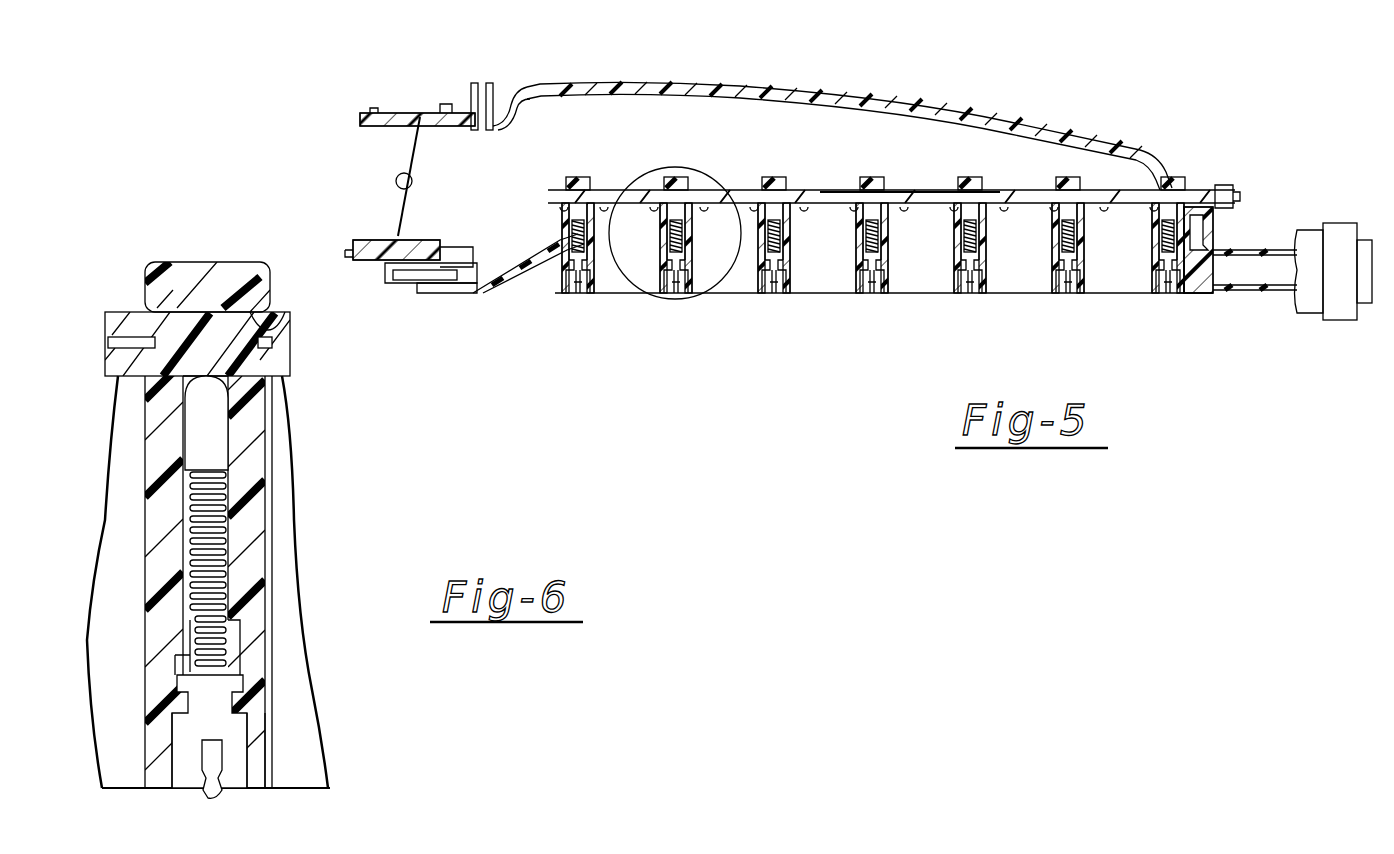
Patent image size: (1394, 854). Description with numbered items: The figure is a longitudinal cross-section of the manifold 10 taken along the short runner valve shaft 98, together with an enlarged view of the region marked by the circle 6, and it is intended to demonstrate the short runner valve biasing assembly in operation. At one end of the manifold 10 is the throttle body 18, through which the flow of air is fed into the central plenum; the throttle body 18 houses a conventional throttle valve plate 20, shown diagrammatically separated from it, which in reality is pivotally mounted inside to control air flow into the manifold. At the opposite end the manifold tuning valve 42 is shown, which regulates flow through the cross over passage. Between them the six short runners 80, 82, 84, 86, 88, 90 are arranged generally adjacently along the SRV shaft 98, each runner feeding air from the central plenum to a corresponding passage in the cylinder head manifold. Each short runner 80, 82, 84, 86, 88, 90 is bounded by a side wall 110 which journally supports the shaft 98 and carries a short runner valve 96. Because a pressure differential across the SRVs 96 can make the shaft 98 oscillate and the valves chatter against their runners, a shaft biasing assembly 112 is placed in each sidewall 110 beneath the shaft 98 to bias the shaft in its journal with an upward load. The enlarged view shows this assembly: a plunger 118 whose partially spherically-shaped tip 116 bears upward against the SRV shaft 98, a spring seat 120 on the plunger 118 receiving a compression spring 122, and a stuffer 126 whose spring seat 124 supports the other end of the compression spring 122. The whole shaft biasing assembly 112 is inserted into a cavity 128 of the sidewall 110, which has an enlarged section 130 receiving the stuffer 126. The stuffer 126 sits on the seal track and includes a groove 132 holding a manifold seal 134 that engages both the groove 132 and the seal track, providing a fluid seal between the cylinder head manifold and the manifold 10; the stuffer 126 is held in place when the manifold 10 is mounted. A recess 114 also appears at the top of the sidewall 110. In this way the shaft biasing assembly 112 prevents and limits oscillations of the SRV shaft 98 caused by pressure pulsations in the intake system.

In FIG. 5, the manifold 10 is at (1058, 86).
In FIG. 5, the throttle body 18 is at (420, 117).
In FIG. 5, the throttle valve plate 20 is at (412, 150).
In FIG. 5, the manifold tuning valve 42 is at (1338, 308).
In FIG. 5, the circle 6 is at (710, 293).
In FIG. 5, the short runner 80 is at (592, 292).
In FIG. 5, the short runner 82 is at (690, 292).
In FIG. 5, the short runner 84 is at (772, 292).
In FIG. 5, the short runner 86 is at (880, 292).
In FIG. 5, the short runner 88 is at (975, 292).
In FIG. 5, the short runner 90 is at (1080, 292).
In FIG. 5, the short runner valve 96 is at (618, 190).
In FIG. 6, the short runner valve 96 is at (122, 340).
In FIG. 5, the short runner valve shaft 98 is at (834, 192).
In FIG. 6, the short runner valve shaft 98 is at (190, 360).
In FIG. 5, the side wall 110 is at (580, 177).
In FIG. 6, the side wall 110 is at (235, 290).
In FIG. 5, the shaft biasing assembly 112 is at (585, 236).
In FIG. 6, the shaft biasing assembly 112 is at (230, 550).
In FIG. 6, the recess 114 is at (272, 322).
In FIG. 6, the spherically-shaped tip 116 is at (245, 395).
In FIG. 6, the plunger 118 is at (218, 440).
In FIG. 6, the spring seat 120 is at (145, 470).
In FIG. 6, the compression spring 122 is at (268, 614).
In FIG. 6, the spring seat 124 is at (245, 675).
In FIG. 6, the stuffer 126 is at (262, 740).
In FIG. 6, the cavity 128 is at (178, 660).
In FIG. 6, the enlarged section 130 is at (186, 680).
In FIG. 6, the groove 132 is at (185, 760).
In FIG. 6, the manifold seal 134 is at (218, 792).